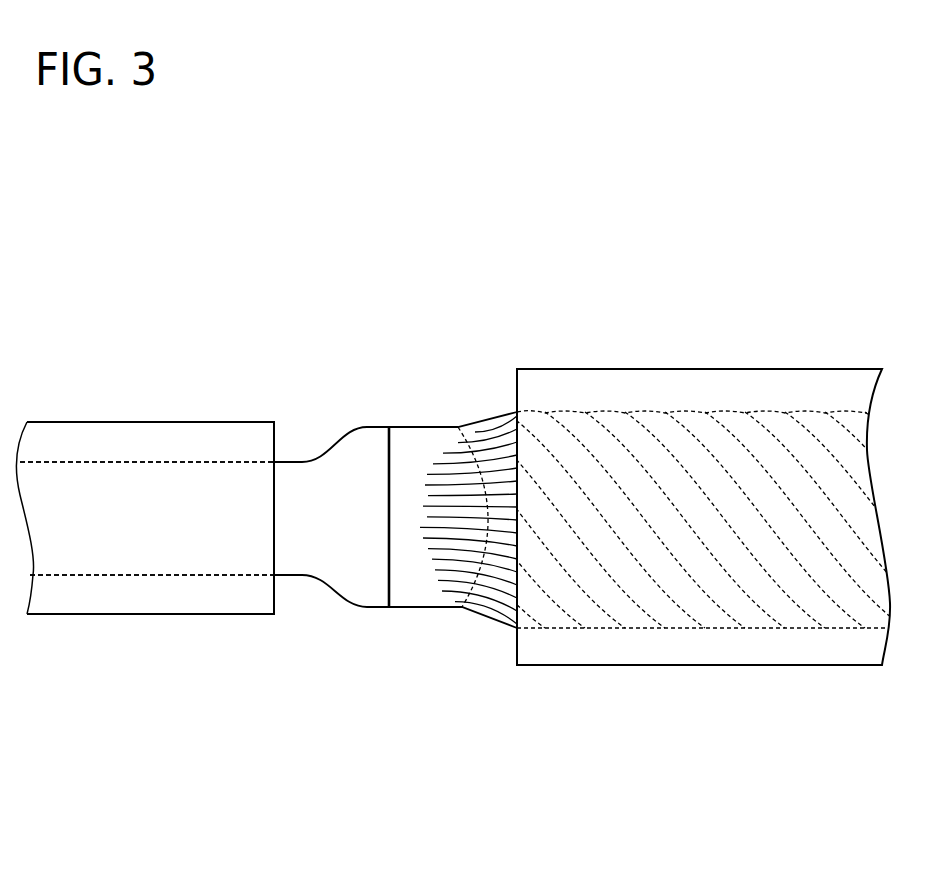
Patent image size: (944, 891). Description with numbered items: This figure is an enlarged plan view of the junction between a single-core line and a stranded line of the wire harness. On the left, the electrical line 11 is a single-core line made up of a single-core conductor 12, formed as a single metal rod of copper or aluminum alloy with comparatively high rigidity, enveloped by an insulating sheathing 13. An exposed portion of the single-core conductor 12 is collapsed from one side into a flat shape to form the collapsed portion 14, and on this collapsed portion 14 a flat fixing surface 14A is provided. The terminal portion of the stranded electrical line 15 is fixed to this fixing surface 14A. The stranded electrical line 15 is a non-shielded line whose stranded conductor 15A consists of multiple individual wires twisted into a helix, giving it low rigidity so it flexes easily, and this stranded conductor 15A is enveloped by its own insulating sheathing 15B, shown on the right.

The electrical line 11 is at (67, 435).
The single-core conductor 12 is at (172, 493).
The insulating sheathing 13 is at (124, 435).
The collapsed portion 14 is at (395, 473).
The fixing surface 14A is at (363, 447).
The stranded electrical line 15 is at (673, 380).
The stranded conductor 15A is at (412, 592).
The insulating sheathing 15B is at (672, 650).